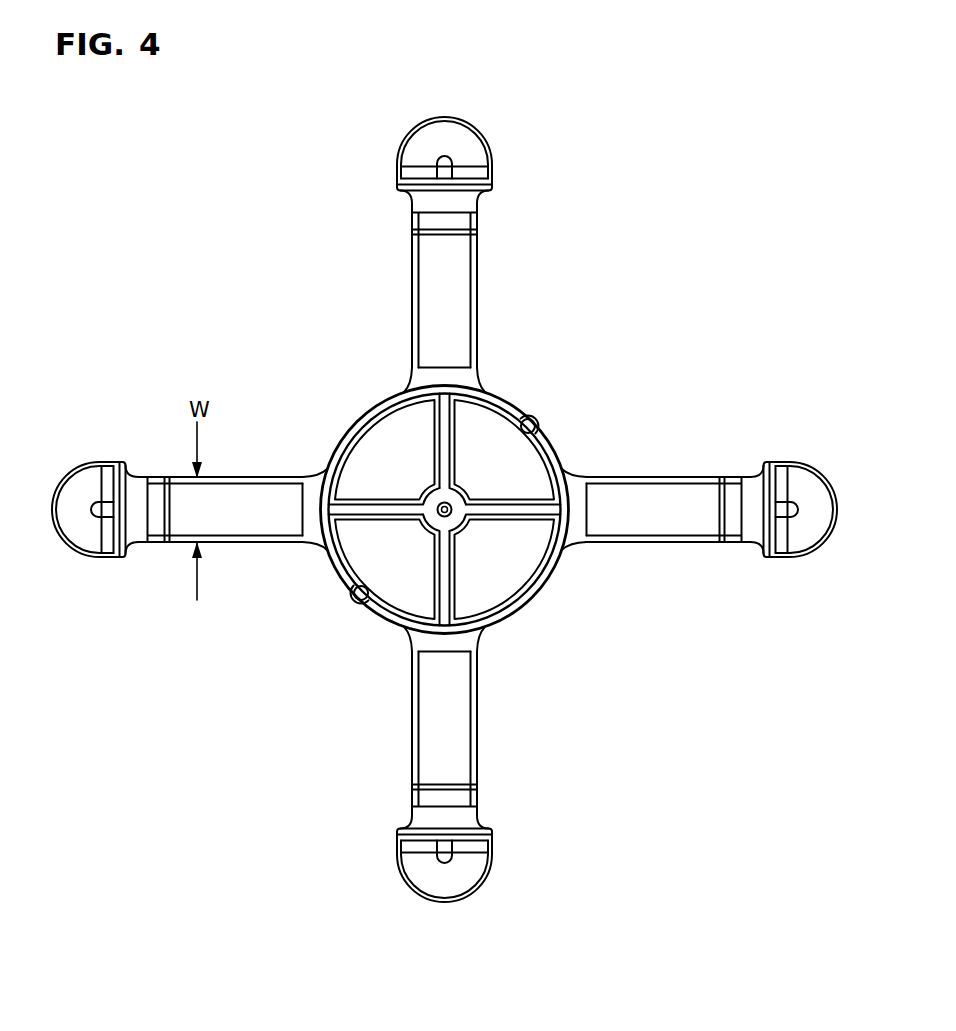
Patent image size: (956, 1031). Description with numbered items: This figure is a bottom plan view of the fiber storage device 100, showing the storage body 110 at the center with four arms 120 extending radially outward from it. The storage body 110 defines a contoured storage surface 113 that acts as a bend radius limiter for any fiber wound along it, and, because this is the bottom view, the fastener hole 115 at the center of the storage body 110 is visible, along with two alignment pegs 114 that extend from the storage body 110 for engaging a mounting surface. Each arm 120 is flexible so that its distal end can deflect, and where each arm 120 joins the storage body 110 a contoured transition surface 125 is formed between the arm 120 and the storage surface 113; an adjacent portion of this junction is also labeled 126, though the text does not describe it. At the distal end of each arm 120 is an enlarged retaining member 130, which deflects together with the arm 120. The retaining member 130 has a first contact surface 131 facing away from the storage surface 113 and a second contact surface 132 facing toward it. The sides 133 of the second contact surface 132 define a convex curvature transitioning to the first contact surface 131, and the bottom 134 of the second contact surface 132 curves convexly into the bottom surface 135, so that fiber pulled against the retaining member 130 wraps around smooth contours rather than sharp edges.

The fiber storage device 100 is at (260, 713).
The storage body 110 is at (534, 616).
The storage surface 113 is at (354, 421).
The alignment pegs 114 is at (530, 424).
The fastener hole 115 is at (440, 506).
The arm 120 is at (481, 252).
The transition surface 125 is at (442, 377).
The arm flare 126 is at (412, 377).
The retaining member 130 is at (401, 142).
The first contact surface 131 is at (444, 118).
The second contact surface 132 is at (433, 192).
The sides 133 is at (482, 190).
The bottom 134 is at (461, 181).
The bottom surface 135 is at (444, 164).